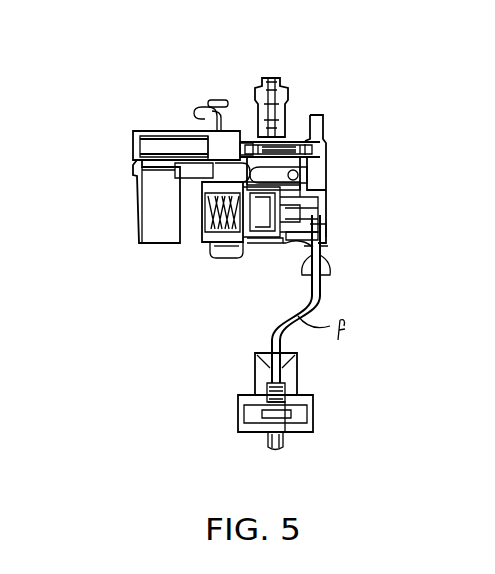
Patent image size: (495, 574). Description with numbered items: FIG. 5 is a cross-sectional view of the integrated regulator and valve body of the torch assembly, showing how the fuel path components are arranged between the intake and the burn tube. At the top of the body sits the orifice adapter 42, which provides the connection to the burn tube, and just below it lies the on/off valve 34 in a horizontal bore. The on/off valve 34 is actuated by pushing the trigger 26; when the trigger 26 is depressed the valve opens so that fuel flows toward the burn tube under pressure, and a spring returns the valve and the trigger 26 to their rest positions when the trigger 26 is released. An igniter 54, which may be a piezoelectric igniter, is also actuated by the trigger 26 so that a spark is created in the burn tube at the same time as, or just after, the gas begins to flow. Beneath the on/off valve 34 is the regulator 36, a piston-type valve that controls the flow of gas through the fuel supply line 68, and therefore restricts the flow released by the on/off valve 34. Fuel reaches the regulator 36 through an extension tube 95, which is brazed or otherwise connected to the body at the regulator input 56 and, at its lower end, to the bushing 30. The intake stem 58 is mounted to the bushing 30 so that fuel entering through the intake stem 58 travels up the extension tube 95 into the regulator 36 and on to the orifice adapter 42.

The orifice adapter 42 is at (305, 86).
The on/off valve 34 is at (326, 148).
The igniter 54 is at (152, 130).
The trigger 26 is at (148, 205).
The regulator 36 is at (318, 213).
The fuel supply line 68 is at (326, 234).
The regulator input 56 is at (292, 249).
The extension tube 95 is at (324, 298).
The intake stem 58 is at (300, 386).
The bushing 30 is at (243, 406).